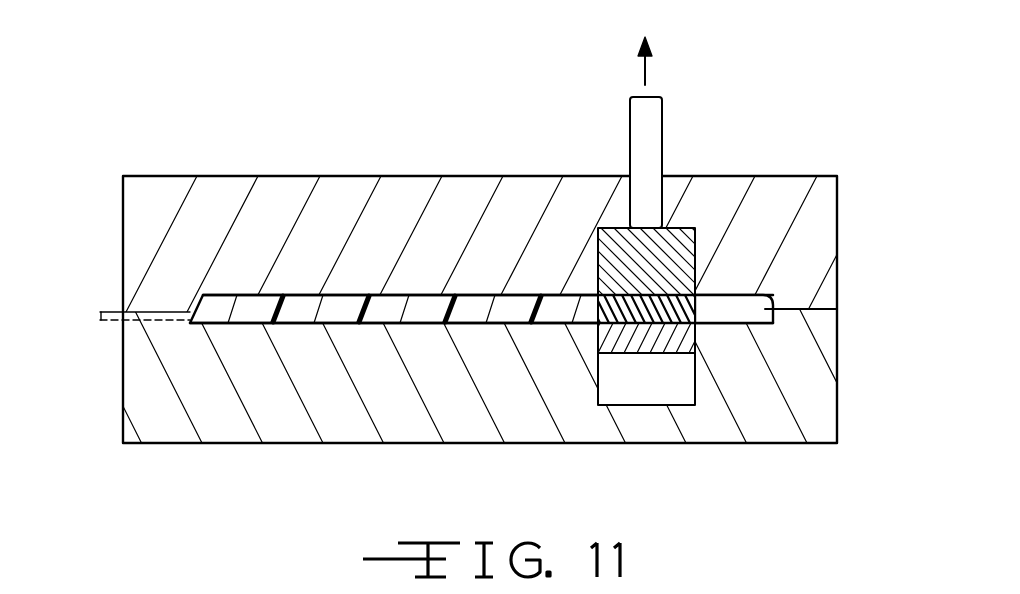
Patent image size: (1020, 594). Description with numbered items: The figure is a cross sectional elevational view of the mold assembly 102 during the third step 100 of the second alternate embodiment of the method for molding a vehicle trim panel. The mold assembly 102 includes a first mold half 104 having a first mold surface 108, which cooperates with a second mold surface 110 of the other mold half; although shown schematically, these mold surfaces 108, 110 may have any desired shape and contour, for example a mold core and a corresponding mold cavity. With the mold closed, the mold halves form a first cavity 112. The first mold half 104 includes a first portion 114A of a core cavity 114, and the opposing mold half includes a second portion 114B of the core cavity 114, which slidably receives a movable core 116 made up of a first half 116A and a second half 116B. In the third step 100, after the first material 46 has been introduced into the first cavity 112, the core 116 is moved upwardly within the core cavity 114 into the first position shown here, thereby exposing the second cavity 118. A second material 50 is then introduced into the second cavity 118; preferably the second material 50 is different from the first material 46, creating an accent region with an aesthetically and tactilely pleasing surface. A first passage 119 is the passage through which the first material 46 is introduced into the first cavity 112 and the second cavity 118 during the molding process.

The third step 100 is at (182, 66).
The mold assembly 102 is at (354, 162).
The first mold half 104 is at (140, 406).
The first mold surface 108 is at (300, 312).
The second mold surface 110 is at (341, 295).
The first cavity 112 is at (393, 325).
The core cavity 114 is at (653, 259).
The first portion of core cavity 114A is at (692, 392).
The second portion of core cavity 114B is at (692, 231).
The movable core 116 is at (620, 286).
The first half of core 116A is at (602, 338).
The second half of core 116B is at (603, 247).
The second cavity 118 is at (603, 336).
The first passage 119 is at (102, 313).
The first material 46 is at (378, 312).
The second material 50 is at (695, 323).